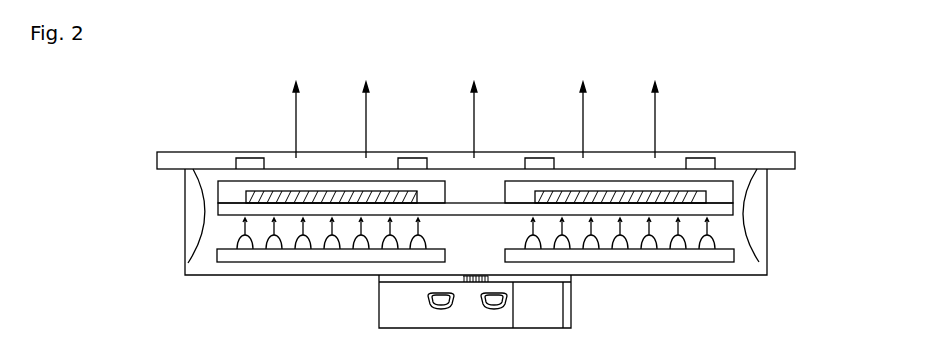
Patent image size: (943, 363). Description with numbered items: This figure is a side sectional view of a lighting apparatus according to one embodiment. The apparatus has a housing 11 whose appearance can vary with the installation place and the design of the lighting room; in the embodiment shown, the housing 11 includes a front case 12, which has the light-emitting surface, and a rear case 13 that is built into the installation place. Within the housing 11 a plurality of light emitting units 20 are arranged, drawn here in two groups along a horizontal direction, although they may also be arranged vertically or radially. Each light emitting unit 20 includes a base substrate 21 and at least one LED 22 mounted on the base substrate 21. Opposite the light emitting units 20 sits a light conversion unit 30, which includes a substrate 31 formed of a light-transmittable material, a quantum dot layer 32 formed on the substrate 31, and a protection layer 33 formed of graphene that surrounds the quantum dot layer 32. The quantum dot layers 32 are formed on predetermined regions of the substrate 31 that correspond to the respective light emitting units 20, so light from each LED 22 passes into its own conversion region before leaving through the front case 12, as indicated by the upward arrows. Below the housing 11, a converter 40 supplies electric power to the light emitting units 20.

The housing 11 is at (95, 160).
The front case 12 is at (157, 160).
The rear case 13 is at (193, 201).
The light emitting unit 20 is at (230, 330).
The base substrate 21 is at (246, 262).
The LED 22 is at (240, 240).
The light conversion unit 30 is at (815, 185).
The substrate 31 is at (727, 210).
The quantum dot layer 32 is at (702, 198).
The protection layer 33 is at (727, 186).
The converter 40 is at (571, 300).